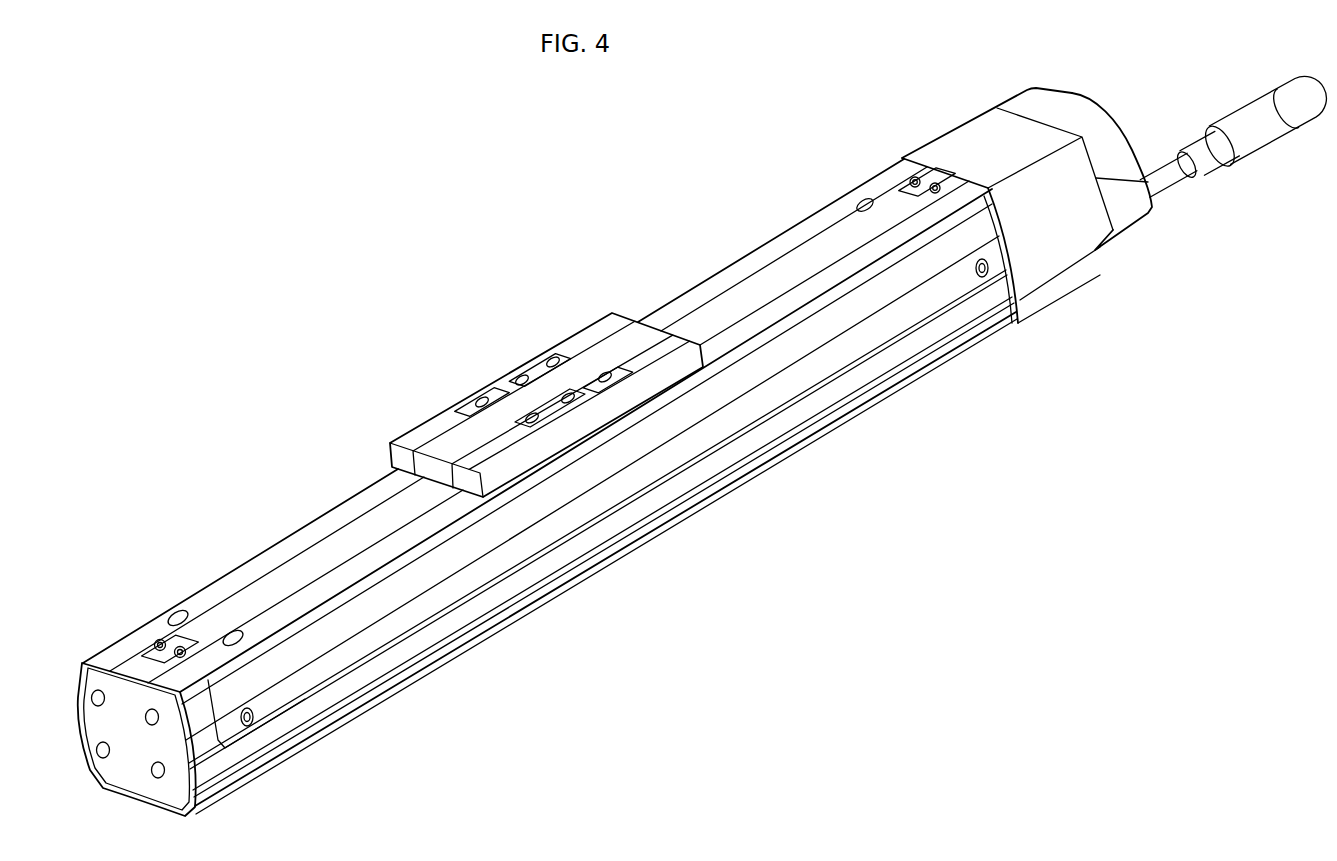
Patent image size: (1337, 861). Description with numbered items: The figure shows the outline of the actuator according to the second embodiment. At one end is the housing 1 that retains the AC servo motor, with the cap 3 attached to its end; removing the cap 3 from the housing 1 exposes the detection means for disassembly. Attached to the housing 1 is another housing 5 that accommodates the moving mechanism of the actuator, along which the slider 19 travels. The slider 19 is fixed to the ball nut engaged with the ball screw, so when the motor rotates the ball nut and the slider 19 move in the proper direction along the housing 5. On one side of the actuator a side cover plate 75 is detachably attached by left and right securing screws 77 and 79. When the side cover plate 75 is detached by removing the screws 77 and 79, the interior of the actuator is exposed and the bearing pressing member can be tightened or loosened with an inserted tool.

The housing 1 is at (977, 112).
The cap 3 is at (1087, 103).
The housing 5 is at (840, 424).
The slider 19 is at (627, 313).
The side cover plate 75 is at (500, 600).
The securing screw 77 is at (247, 728).
The securing screw 79 is at (990, 284).